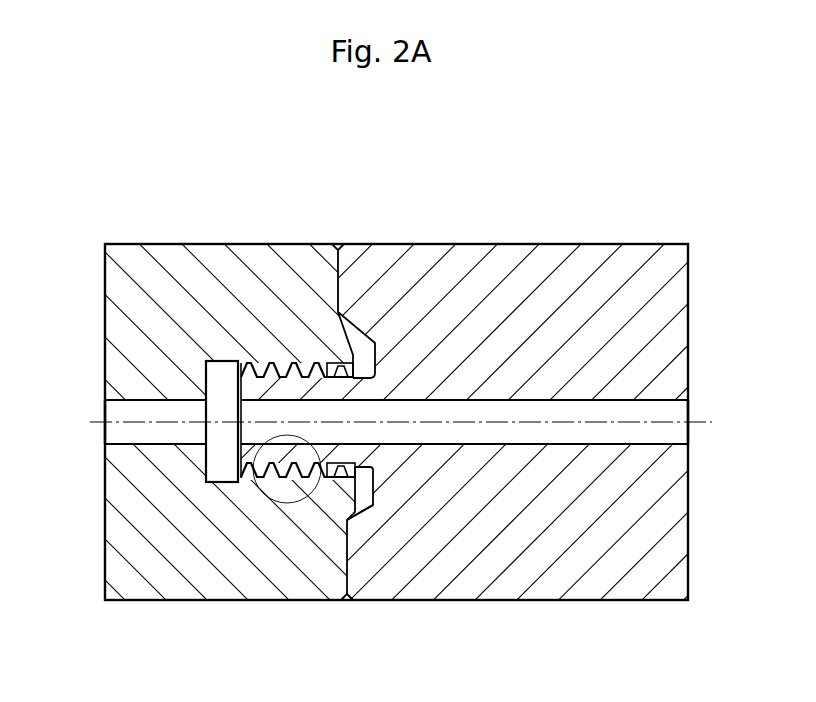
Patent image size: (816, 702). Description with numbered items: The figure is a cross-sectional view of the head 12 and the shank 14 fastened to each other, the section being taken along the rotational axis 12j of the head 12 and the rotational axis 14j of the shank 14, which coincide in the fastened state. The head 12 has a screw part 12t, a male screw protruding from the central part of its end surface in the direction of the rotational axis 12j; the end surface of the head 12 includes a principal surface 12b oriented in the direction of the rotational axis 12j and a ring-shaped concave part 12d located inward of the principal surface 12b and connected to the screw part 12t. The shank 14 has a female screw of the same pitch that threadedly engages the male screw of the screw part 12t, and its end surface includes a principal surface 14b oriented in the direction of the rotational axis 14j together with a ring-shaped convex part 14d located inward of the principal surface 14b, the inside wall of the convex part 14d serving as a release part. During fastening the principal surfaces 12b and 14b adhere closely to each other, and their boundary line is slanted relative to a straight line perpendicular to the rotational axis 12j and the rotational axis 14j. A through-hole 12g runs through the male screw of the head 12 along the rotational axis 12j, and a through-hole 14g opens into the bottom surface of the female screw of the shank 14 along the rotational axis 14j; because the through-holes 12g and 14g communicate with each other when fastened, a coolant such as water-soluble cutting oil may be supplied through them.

The head 12 is at (578, 265).
The shank 14 is at (158, 283).
The principal surface 12b is at (330, 252).
The principal surface 14b is at (338, 312).
The screw part 12t is at (273, 363).
The rotational axis 12j is at (657, 422).
The rotational axis 14j is at (125, 420).
The through-hole 12g is at (562, 433).
The through-hole 14g is at (148, 433).
The concave part 12d is at (363, 500).
The convex part 14d is at (341, 484).